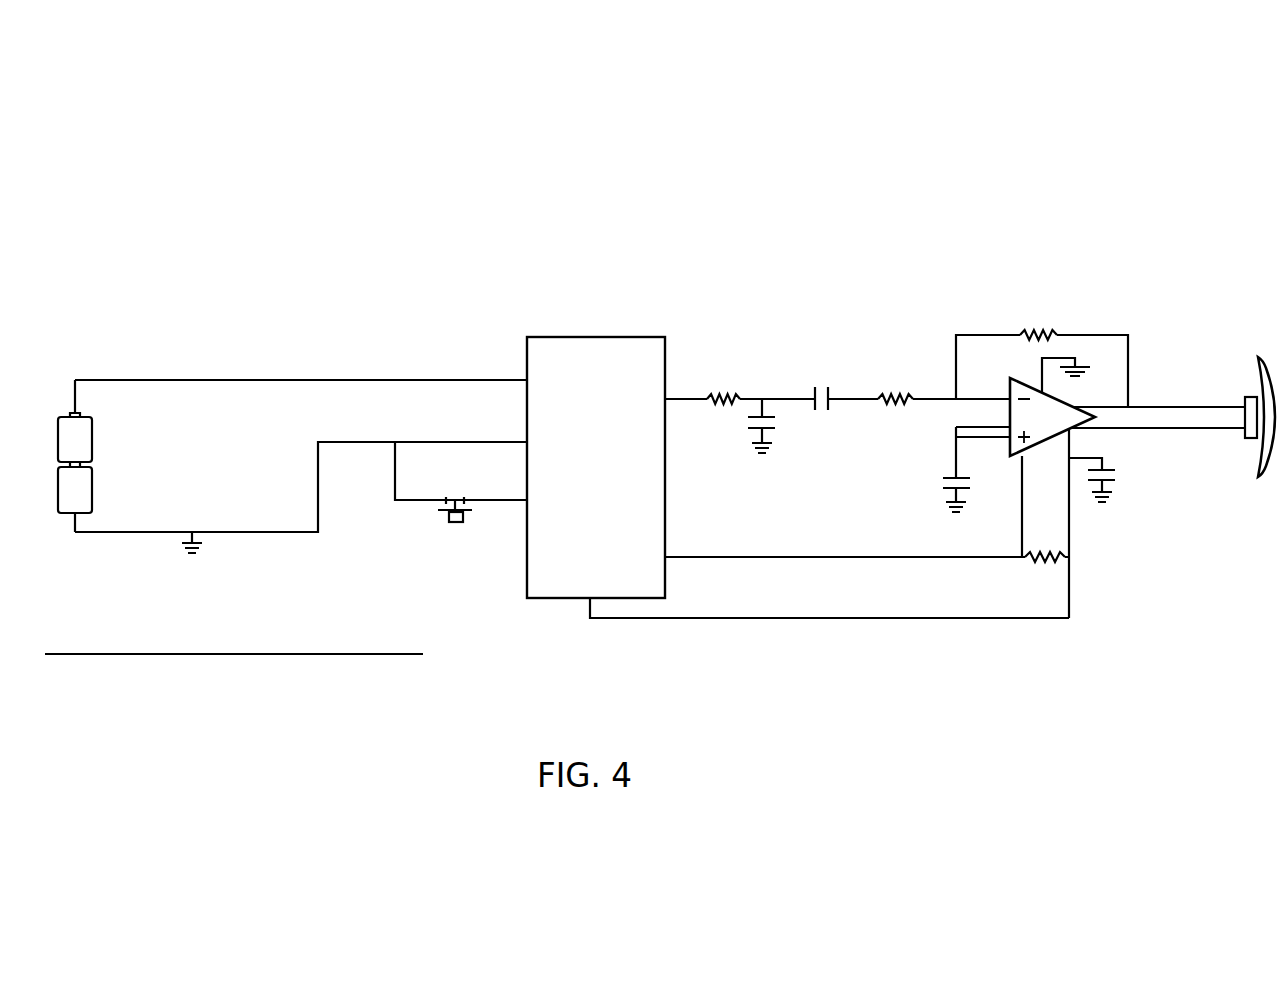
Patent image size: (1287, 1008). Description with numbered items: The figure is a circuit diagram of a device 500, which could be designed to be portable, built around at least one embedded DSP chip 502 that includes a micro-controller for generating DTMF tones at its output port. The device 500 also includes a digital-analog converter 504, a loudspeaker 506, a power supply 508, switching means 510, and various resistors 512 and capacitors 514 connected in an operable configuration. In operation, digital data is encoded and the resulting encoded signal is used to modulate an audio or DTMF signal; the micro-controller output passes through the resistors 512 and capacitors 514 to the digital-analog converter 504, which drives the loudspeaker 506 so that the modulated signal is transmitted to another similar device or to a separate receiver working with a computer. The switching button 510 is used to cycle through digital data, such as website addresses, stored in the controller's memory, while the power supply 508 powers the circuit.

The device 500 is at (860, 195).
The embedded DSP chip 502 is at (535, 600).
The digital-analog converter 504 is at (1112, 317).
The loudspeaker 506 is at (1226, 525).
The power supply 508 is at (57, 386).
The switching means 510 is at (430, 510).
The resistors 512 is at (743, 387).
The capacitors 514 is at (822, 412).